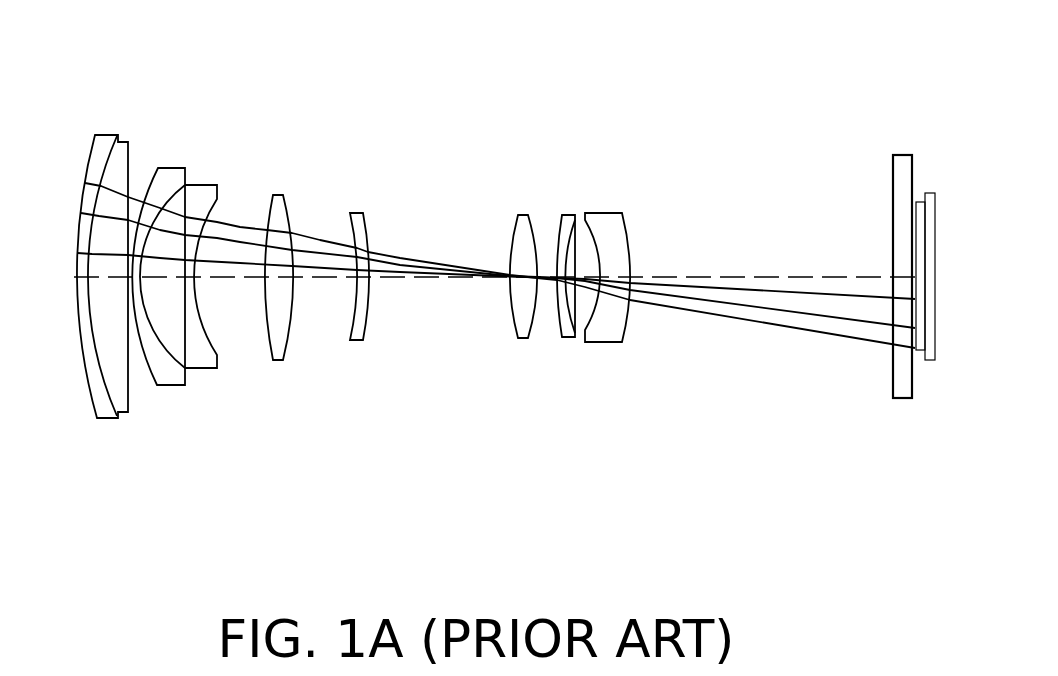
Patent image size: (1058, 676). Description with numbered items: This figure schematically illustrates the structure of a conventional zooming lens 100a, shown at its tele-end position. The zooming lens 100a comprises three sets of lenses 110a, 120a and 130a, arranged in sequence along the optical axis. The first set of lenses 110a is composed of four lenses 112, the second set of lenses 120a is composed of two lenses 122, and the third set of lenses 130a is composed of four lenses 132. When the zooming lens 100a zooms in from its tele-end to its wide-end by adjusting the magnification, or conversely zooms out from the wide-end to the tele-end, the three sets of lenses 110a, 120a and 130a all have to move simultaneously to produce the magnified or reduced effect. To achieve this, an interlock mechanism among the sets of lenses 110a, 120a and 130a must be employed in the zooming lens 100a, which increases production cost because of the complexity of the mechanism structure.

The lenses 112 is at (103, 142).
The lenses 122 is at (279, 202).
The lenses 132 is at (527, 223).
The first set of lenses 110a is at (150, 243).
The second set of lenses 120a is at (312, 271).
The third set of lenses 130a is at (565, 282).
The zooming lens 100a is at (355, 273).